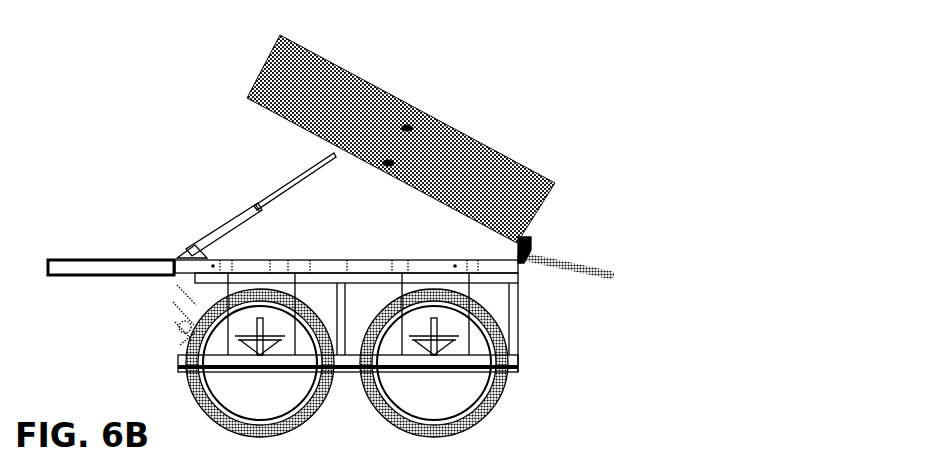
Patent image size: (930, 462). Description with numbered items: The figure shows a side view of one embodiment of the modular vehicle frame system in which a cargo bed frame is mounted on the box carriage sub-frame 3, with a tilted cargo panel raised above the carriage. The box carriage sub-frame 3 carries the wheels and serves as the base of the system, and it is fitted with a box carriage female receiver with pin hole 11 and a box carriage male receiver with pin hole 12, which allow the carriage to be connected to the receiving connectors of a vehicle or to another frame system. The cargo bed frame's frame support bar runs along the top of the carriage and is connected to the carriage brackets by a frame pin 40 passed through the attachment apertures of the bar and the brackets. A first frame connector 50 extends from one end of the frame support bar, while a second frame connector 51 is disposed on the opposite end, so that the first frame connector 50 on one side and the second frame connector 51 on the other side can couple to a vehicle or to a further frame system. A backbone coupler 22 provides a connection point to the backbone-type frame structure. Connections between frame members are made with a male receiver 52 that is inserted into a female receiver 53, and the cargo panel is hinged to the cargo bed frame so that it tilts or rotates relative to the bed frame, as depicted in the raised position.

The box carriage sub-frame 3 is at (343, 315).
The box carriage female receiver with pin hole 11 is at (518, 362).
The box carriage male receiver with pin hole 12 is at (177, 367).
The backbone coupler 22 is at (455, 260).
The frame pin 40 is at (387, 258).
The first frame connector 50 is at (128, 258).
The second frame connector 51 is at (518, 280).
The male receiver 52 is at (173, 357).
The female receiver 53 is at (518, 283).